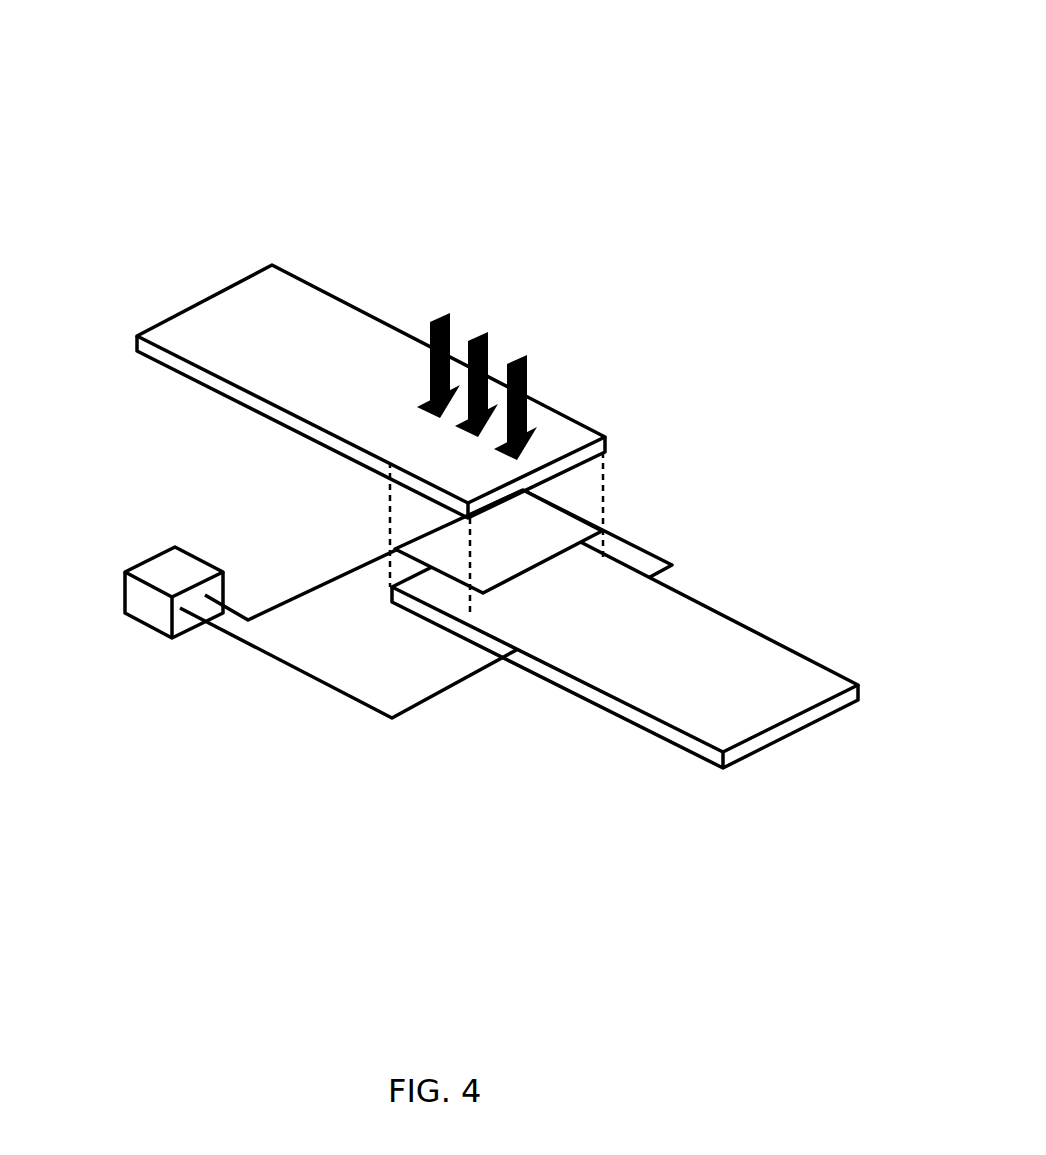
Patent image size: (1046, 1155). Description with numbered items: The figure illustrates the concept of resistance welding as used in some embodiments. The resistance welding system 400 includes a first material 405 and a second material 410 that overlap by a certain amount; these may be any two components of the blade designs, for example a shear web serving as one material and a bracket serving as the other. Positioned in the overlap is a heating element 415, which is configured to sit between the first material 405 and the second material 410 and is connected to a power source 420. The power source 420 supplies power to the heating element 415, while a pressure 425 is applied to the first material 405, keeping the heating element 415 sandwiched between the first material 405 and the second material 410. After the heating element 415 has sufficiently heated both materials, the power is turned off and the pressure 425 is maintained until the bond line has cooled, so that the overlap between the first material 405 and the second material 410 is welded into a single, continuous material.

The resistance welding system 400 is at (703, 69).
The first material 405 is at (311, 340).
The second material 410 is at (750, 675).
The heating element 415 is at (545, 529).
The power source 420 is at (170, 572).
The pressure 425 is at (483, 372).